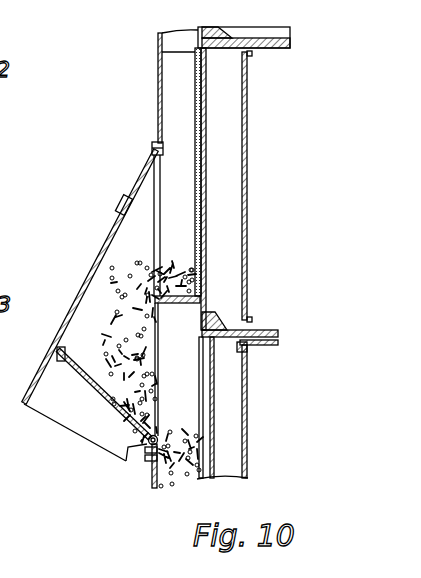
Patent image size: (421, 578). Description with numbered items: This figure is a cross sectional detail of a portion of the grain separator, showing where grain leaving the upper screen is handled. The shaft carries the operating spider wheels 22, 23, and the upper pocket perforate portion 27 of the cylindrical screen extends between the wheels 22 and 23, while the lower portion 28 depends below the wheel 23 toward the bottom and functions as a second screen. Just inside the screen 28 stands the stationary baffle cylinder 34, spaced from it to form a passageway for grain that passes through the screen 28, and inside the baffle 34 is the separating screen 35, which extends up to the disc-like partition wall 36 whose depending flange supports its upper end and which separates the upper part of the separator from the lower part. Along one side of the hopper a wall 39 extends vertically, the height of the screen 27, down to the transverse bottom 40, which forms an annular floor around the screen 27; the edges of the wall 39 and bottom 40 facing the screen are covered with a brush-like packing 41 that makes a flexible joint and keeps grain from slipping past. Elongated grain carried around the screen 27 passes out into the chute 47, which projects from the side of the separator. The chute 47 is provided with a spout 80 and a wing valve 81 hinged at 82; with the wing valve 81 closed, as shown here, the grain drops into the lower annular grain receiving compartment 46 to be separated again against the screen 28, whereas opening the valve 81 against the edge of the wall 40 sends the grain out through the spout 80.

The spider wheel 22 is at (283, 48).
The upper pocket perforate screen portion 27 is at (207, 162).
The wall 39 is at (177, 120).
The brush-like packing 41 is at (200, 299).
The bottom 40 is at (199, 305).
The spider wheel 23 is at (278, 331).
The partition wall 36 is at (279, 344).
The separating screen 35 is at (247, 378).
The baffle cylinder 34 is at (215, 418).
The lower screen portion 28 is at (203, 436).
The lower annular grain receiving compartment 46 is at (168, 480).
The chute 47 is at (72, 331).
The wing valve 81 is at (110, 404).
The spout 80 is at (55, 407).
The hinge 82 is at (125, 450).